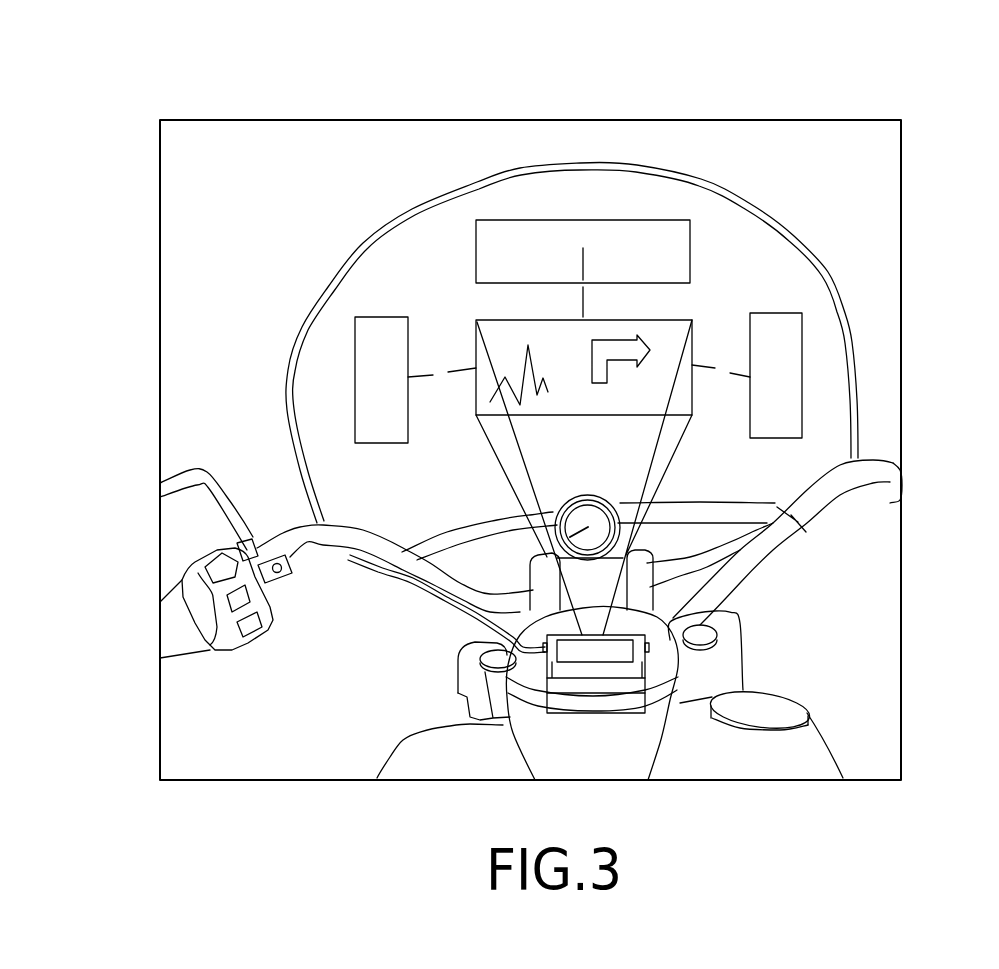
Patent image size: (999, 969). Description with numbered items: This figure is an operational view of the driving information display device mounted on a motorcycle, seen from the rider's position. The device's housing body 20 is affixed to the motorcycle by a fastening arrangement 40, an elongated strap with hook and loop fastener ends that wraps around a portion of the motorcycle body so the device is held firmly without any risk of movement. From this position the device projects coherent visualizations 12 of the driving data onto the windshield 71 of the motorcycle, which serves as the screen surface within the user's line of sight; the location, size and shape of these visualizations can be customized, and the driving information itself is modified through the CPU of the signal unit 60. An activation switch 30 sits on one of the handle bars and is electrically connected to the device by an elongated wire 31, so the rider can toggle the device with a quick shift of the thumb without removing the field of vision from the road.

The coherent visualizations 12 is at (607, 323).
The housing body 20 is at (673, 620).
The activation switch 30 is at (287, 550).
The elongated wire 31 is at (388, 570).
The fastening arrangement 40 is at (733, 660).
The signal unit 60 is at (584, 375).
The windshield 71 is at (753, 262).